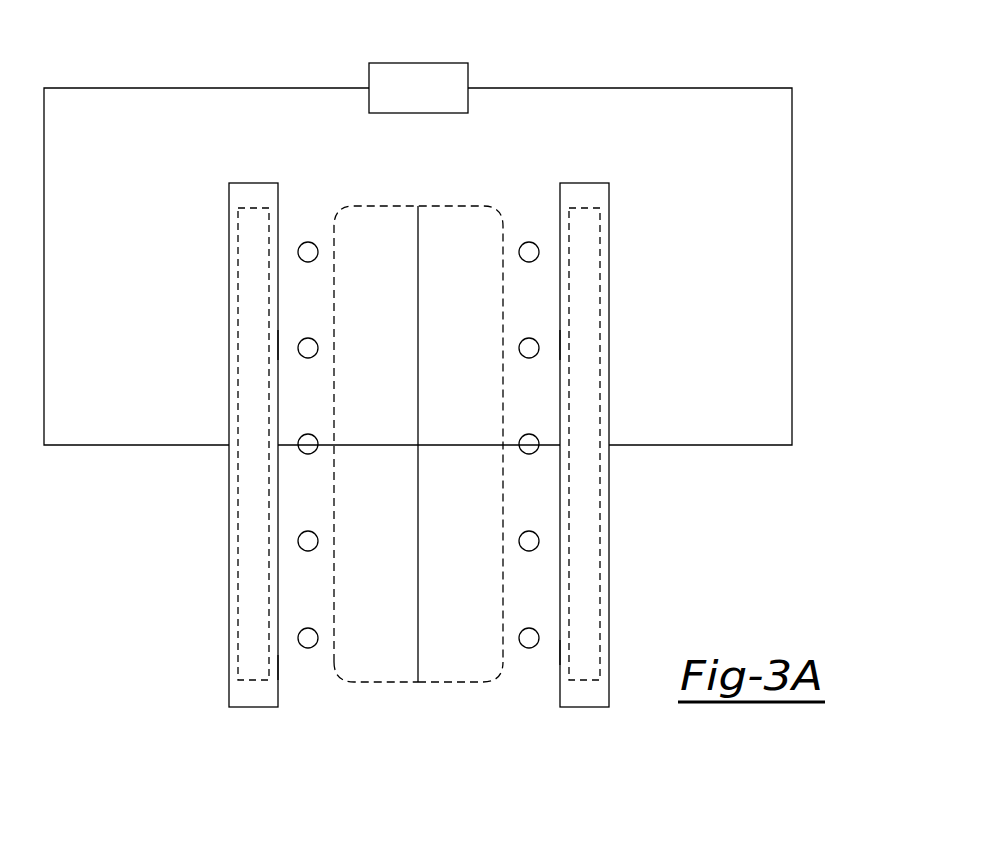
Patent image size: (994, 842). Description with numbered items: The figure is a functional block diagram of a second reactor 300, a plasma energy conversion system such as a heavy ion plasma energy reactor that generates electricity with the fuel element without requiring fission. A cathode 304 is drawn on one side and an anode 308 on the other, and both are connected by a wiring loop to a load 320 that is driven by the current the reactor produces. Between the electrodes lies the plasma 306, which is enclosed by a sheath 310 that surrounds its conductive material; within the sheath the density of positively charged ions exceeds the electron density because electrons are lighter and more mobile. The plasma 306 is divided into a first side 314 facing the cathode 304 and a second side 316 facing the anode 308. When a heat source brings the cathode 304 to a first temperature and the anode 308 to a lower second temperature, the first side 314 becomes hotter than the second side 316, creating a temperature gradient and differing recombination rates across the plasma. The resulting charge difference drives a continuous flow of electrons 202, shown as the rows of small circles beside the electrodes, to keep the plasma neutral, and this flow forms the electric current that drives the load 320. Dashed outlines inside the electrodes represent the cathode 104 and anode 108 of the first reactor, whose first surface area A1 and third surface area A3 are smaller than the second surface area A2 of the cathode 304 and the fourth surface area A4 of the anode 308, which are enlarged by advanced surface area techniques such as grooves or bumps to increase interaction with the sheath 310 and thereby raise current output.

The second reactor 300 is at (740, 68).
The load 320 is at (468, 73).
The cathode 304 is at (229, 592).
The anode 308 is at (609, 600).
The cathode 104 is at (245, 292).
The anode 108 is at (598, 292).
The sheath 310 is at (392, 203).
The plasma 306 is at (450, 250).
The first side of the plasma 314 is at (375, 663).
The second side of the plasma 316 is at (453, 655).
The electrons 202 is at (312, 243).
The first surface area A1 is at (272, 340).
The second surface area A2 is at (278, 666).
The third surface area A3 is at (562, 340).
The fourth surface area A4 is at (560, 648).